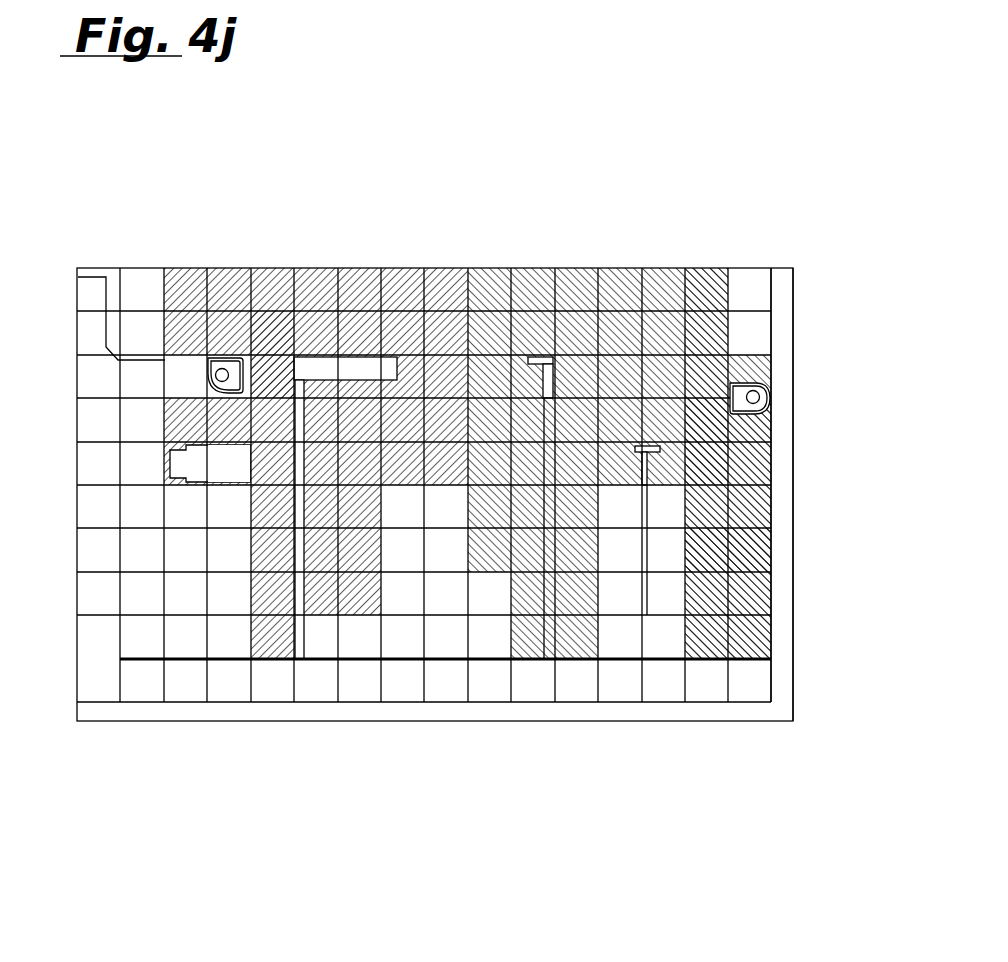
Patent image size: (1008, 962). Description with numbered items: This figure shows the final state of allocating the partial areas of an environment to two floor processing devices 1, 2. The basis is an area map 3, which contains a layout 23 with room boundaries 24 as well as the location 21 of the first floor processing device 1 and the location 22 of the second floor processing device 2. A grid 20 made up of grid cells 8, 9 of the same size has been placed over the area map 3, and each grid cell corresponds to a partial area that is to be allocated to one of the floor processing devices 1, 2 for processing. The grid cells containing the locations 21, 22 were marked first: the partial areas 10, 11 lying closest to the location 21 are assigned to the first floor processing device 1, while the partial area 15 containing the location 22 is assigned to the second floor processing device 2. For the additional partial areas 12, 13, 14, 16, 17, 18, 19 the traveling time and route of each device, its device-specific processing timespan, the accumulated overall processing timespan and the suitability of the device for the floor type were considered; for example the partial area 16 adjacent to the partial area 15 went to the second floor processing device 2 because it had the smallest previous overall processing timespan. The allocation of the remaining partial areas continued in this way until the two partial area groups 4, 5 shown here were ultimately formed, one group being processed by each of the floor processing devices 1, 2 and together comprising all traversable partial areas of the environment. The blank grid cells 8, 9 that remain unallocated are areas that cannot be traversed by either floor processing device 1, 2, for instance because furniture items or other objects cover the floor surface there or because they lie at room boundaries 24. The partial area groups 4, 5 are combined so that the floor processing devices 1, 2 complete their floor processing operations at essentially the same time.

The first floor processing device 1 is at (778, 290).
The second floor processing device 2 is at (241, 280).
The area map 3 is at (818, 328).
The partial area group 4 is at (362, 405).
The partial area group 5 is at (611, 392).
The grid cell 8 is at (708, 632).
The grid cell 9 is at (748, 632).
The partial area 10 is at (800, 342).
The partial area 11 is at (752, 425).
The partial area 12 is at (708, 417).
The partial area 13 is at (707, 382).
The partial area 14 is at (747, 462).
The partial area 15 is at (217, 362).
The partial area 16 is at (275, 375).
The partial area 17 is at (270, 420).
The partial area 18 is at (252, 447).
The partial area 19 is at (188, 418).
The grid 20 is at (733, 568).
The location 21 is at (742, 392).
The location 22 is at (258, 338).
The layout 23 is at (795, 527).
The room boundaries 24 is at (640, 592).